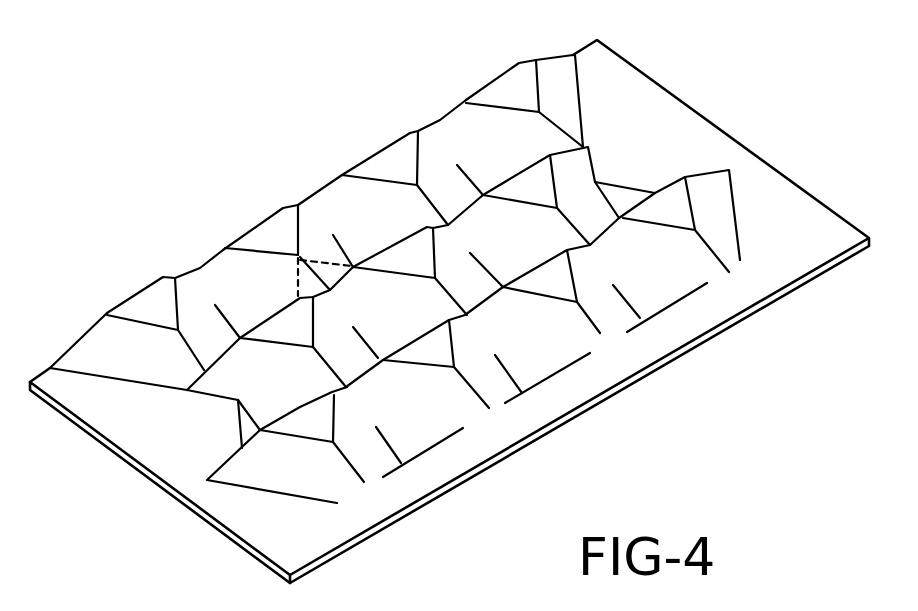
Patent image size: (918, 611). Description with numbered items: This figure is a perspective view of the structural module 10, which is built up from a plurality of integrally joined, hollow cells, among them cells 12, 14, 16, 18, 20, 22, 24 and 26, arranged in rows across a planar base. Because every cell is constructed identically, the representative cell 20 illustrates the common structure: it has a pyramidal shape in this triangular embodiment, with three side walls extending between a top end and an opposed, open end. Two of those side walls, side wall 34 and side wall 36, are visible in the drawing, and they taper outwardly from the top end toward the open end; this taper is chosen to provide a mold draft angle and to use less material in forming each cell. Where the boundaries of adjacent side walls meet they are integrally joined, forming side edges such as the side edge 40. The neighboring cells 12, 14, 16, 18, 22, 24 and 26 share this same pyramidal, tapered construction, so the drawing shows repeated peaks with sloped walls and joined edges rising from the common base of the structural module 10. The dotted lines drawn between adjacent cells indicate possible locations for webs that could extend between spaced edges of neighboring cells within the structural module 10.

The structural module 10 is at (449, 304).
The cell 12 is at (275, 325).
The cell 14 is at (394, 256).
The cell 16 is at (526, 174).
The cell 18 is at (299, 412).
The cell 20 is at (414, 357).
The cell 22 is at (568, 278).
The cell 24 is at (128, 311).
The cell 26 is at (278, 230).
The side wall 34 is at (443, 382).
The side wall 36 is at (475, 338).
The side edge 40 is at (483, 400).